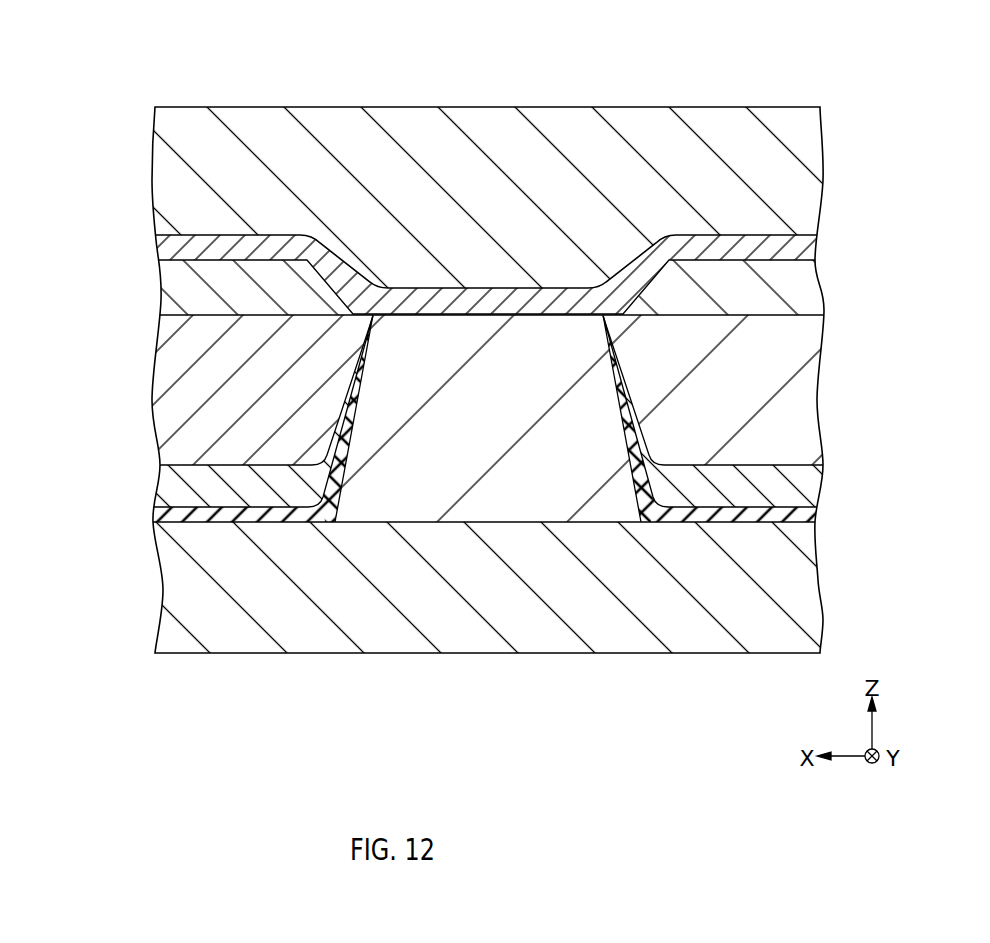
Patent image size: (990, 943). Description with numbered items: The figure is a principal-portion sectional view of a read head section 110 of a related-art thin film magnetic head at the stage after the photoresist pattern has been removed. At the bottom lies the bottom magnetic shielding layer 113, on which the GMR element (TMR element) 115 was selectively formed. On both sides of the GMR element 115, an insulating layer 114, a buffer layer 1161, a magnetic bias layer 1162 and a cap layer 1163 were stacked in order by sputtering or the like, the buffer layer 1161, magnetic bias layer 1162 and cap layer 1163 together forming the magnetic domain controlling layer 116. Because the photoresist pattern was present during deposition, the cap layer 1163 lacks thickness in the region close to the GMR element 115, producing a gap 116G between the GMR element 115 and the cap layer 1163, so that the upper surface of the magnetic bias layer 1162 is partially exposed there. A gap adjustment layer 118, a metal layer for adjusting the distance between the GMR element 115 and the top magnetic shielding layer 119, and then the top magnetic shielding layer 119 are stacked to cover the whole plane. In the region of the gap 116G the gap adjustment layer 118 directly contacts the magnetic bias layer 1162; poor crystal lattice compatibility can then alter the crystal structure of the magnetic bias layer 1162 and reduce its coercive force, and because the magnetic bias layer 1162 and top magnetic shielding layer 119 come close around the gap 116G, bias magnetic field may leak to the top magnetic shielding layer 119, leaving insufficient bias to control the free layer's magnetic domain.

The read head section 110 is at (898, 90).
The bottom magnetic shielding layer 113 is at (819, 586).
The insulating layer 114 is at (158, 516).
The GMR element (TMR element) 115 is at (480, 438).
The magnetic domain controlling layer 116 is at (517, 383).
The buffer layer 1161 is at (158, 480).
The magnetic bias layer 1162 is at (155, 423).
The cap layer 1163 is at (160, 289).
The gap 116G is at (344, 275).
The gap adjustment layer 118 is at (817, 247).
The top magnetic shielding layer 119 is at (818, 153).